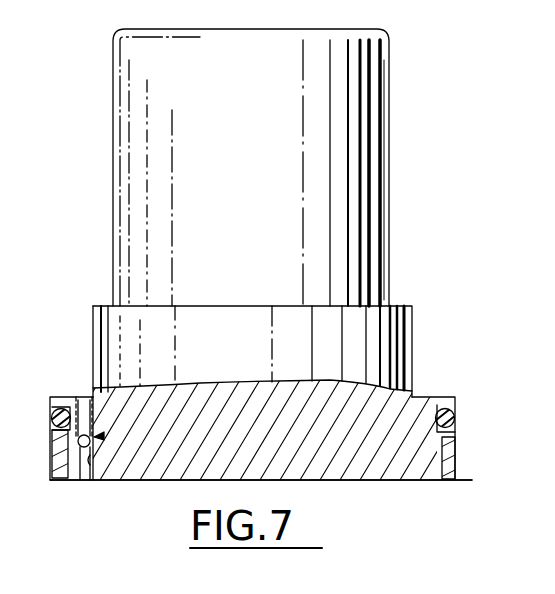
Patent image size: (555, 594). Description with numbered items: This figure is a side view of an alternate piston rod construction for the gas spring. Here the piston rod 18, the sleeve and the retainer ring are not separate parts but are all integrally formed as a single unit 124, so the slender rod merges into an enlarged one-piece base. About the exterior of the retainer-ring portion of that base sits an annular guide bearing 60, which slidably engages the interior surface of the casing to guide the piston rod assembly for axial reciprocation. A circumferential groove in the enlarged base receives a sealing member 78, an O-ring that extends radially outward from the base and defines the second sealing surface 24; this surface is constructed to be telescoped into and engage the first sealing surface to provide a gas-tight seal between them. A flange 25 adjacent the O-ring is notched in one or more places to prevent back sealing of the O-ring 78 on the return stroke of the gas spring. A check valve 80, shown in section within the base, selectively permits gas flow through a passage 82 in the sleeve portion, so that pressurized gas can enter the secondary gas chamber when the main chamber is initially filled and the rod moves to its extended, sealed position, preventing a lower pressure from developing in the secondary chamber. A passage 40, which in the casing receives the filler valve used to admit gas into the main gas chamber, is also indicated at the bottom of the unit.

The piston rod 18 is at (392, 54).
The single unit 124 is at (404, 146).
The check valve 80 is at (138, 378).
The second sealing surface 24 is at (458, 424).
The flange 25 is at (52, 398).
The passage 82 is at (82, 458).
The sealing member 78 is at (458, 414).
The annular guide bearing 60 is at (450, 452).
The passage 40 is at (279, 482).